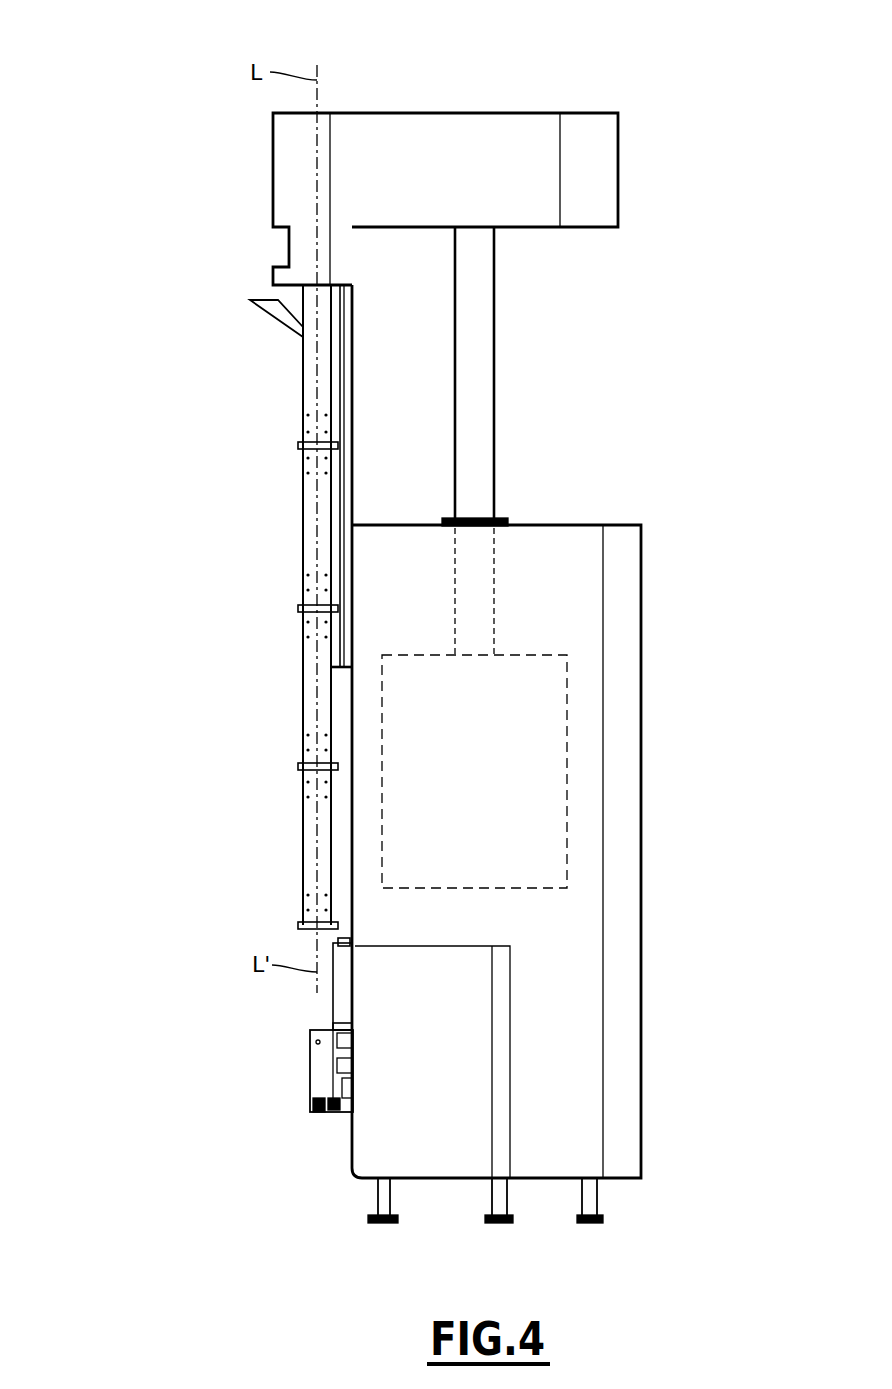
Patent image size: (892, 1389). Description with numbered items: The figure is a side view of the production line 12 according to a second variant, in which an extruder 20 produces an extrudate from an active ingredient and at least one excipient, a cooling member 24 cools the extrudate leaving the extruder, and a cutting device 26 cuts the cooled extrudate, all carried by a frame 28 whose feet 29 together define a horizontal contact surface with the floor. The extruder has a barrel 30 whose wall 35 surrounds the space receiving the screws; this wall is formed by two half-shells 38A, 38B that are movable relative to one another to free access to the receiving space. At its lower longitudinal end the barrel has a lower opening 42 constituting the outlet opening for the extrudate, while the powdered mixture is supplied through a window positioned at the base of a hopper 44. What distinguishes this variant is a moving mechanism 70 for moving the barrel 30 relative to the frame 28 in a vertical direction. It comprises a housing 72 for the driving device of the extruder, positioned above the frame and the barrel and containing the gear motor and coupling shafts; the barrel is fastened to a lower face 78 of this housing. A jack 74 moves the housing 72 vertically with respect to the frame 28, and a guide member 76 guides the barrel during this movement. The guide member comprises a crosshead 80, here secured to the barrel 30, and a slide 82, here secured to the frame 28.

The production line 12 is at (712, 108).
The extruder 20 is at (168, 304).
The cooling member 24 is at (312, 1008).
The cutting device 26 is at (278, 1073).
The frame 28 is at (625, 1027).
The feet 29 is at (388, 1202).
The barrel 30 is at (292, 537).
The wall 35 is at (310, 653).
The half-shell 38A is at (325, 877).
The half-shell 38B is at (313, 835).
The lower opening 42 is at (317, 933).
The hopper 44 is at (280, 317).
The moving mechanism 70 is at (555, 635).
The housing 72 is at (510, 128).
The jack 74 is at (550, 785).
The guide member 76 is at (362, 440).
The lower face 78 is at (273, 290).
The crosshead 80 is at (348, 493).
The slide 82 is at (350, 717).